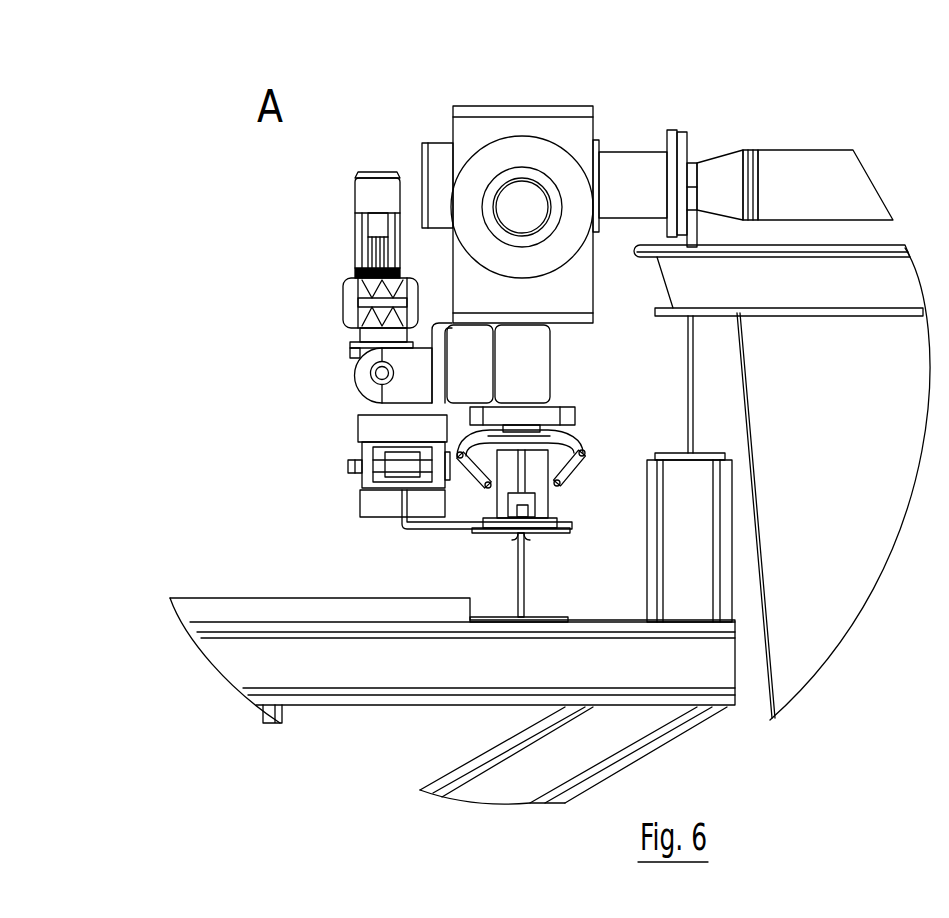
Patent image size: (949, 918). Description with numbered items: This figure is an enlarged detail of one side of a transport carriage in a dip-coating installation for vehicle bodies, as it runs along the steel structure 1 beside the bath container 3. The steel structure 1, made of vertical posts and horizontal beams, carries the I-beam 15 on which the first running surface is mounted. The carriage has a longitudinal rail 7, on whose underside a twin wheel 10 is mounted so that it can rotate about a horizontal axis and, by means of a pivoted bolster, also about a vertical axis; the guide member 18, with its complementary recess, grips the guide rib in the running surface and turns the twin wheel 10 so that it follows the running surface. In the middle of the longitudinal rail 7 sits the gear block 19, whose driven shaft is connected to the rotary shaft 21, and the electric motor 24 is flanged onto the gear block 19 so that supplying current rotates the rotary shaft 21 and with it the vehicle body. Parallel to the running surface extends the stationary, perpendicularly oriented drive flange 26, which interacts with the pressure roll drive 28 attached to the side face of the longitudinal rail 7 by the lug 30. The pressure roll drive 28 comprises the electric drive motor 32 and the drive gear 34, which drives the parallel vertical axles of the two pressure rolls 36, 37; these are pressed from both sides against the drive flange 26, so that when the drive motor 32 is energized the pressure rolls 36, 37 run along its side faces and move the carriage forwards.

The steel structure 1 is at (283, 654).
The bath container 3 is at (848, 462).
The longitudinal rail 7 is at (527, 370).
The twin wheel 10 is at (538, 467).
The I-beam 15 is at (523, 563).
The guide member 18 is at (527, 498).
The gear block 19 is at (468, 136).
The rotary shaft 21 is at (797, 170).
The electric motor 24 is at (525, 190).
The drive flange 26 is at (387, 503).
The pressure roll drive 28 is at (342, 291).
The lug 30 is at (417, 392).
The electric drive motor 32 is at (370, 205).
The drive gear 34 is at (357, 372).
The pressure roll 36 is at (370, 505).
The pressure roll 37 is at (427, 502).